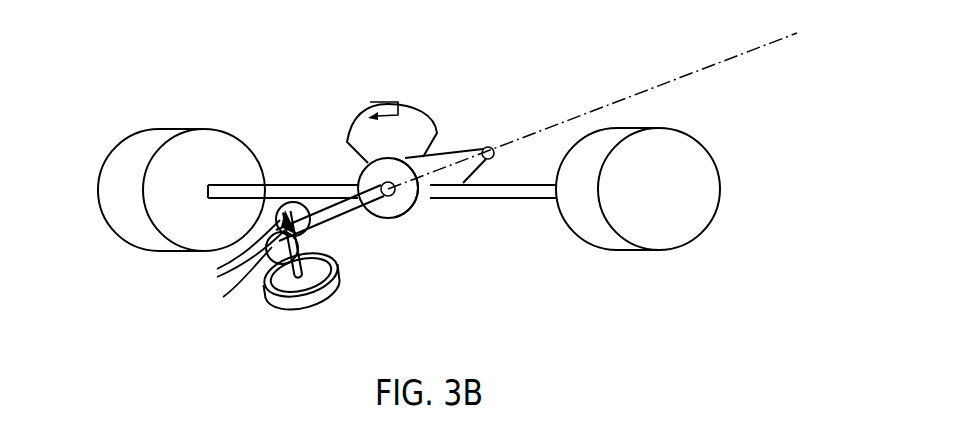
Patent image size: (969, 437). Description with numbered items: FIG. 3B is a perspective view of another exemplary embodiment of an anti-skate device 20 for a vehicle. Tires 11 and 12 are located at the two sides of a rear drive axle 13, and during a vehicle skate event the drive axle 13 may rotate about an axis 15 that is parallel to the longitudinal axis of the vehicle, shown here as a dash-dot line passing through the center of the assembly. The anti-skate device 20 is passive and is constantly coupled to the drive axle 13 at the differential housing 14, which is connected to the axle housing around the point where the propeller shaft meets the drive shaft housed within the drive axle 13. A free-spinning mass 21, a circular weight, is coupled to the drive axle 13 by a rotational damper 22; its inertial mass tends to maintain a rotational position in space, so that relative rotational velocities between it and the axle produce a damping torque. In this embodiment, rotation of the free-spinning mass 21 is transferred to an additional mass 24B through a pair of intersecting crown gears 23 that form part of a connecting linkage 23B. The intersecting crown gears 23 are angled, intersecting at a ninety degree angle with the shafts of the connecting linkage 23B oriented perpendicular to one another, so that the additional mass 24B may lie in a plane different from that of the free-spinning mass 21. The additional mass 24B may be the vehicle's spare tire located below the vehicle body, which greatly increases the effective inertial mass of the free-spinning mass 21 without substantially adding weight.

The tire 11 is at (100, 172).
The tire 12 is at (720, 173).
The drive axle 13 is at (488, 200).
The differential housing 14 is at (427, 203).
The axis 15 is at (777, 42).
The anti-skate device 20 is at (303, 97).
The free-spinning mass 21 is at (383, 220).
The rotational damper 22 is at (427, 113).
The intersecting crown gears 23 is at (236, 252).
The connecting linkage 23B is at (227, 281).
The additional mass 24B is at (287, 312).